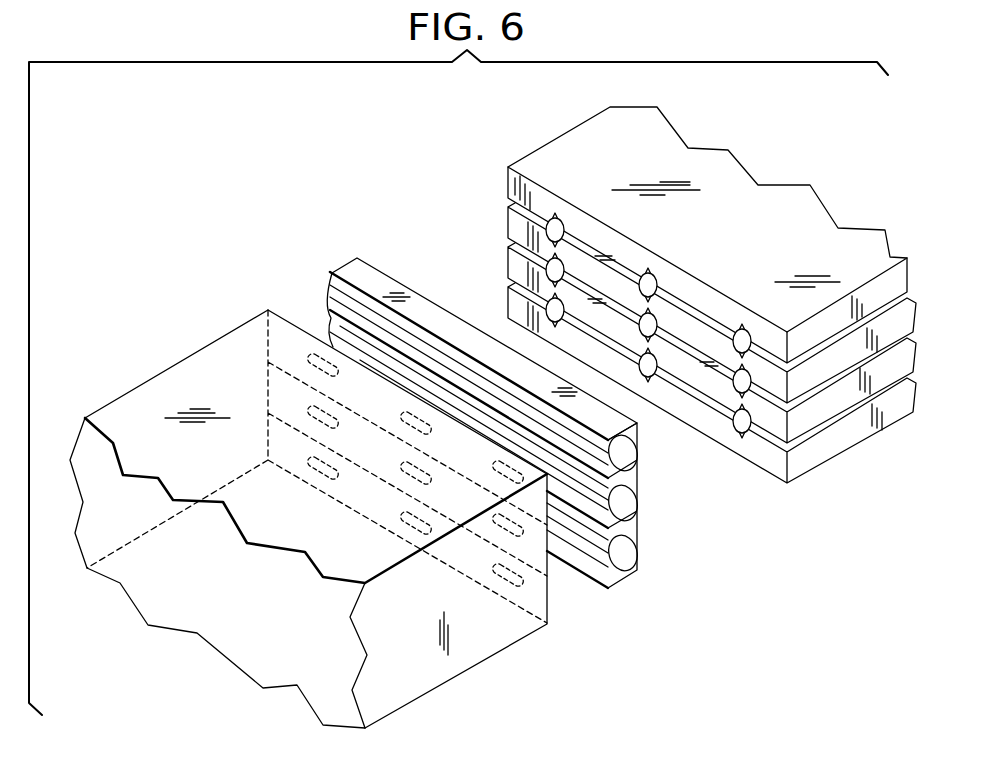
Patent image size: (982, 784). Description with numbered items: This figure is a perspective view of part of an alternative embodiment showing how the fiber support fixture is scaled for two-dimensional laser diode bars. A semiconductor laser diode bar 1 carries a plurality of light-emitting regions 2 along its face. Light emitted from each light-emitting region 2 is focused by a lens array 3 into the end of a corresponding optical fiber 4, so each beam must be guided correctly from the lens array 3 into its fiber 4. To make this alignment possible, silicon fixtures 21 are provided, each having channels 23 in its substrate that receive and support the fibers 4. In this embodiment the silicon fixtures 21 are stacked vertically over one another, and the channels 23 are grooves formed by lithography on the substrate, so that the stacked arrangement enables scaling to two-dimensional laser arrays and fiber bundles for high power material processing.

The semiconductor laser diode bar 1 is at (236, 341).
The light-emitting regions 2 is at (309, 340).
The lens array 3 is at (375, 278).
The optical fiber 4 is at (547, 230).
The silicon fixture 21 is at (797, 466).
The channels 23 is at (744, 436).